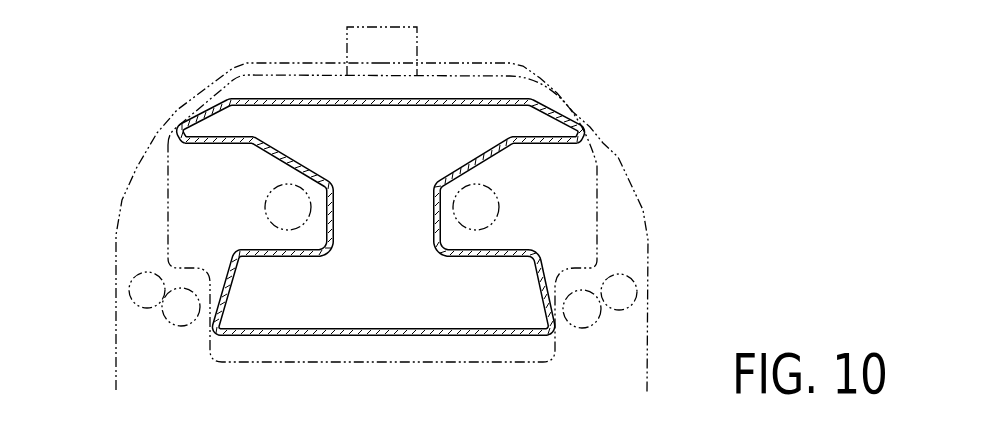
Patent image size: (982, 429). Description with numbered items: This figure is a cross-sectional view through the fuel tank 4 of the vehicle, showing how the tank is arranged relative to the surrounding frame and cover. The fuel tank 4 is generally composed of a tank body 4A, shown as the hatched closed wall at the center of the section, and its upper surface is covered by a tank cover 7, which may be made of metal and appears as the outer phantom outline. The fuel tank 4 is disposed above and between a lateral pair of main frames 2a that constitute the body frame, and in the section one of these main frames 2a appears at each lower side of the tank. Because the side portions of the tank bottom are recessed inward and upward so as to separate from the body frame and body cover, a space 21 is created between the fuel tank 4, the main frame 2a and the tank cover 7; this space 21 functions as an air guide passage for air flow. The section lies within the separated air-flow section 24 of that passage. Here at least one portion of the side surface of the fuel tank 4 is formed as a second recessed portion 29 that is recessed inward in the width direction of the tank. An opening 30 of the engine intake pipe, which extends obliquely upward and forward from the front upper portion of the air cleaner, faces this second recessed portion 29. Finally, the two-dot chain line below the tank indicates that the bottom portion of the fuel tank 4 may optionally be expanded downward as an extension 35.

The fuel tank 4 is at (628, 102).
The tank body 4A is at (523, 100).
The tank cover 7 is at (138, 162).
The main frame 2a is at (140, 273).
The space (air guide passage) 21 is at (185, 330).
The separated air-flow section 24 is at (536, 229).
The second recessed portion 29 is at (452, 242).
The opening of the engine intake pipe 30 is at (453, 206).
The extension 35 is at (533, 362).